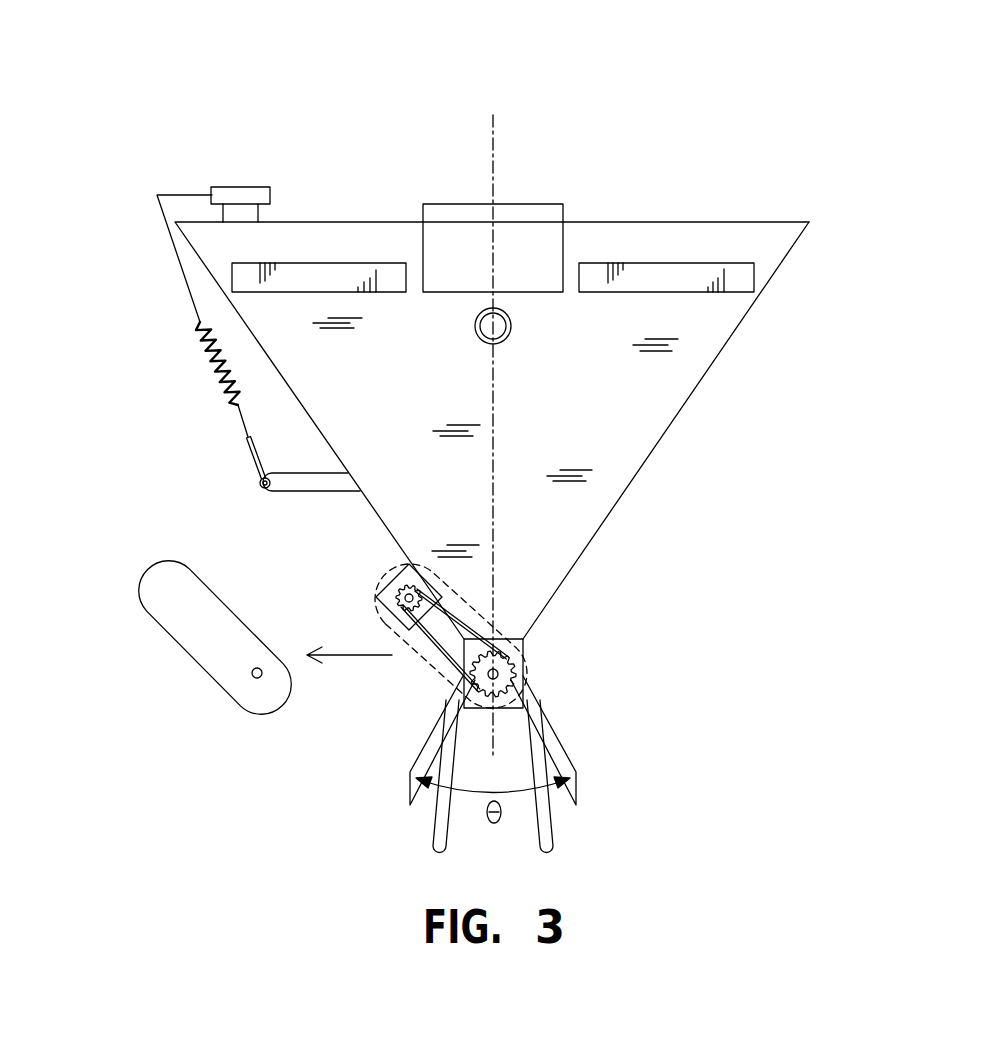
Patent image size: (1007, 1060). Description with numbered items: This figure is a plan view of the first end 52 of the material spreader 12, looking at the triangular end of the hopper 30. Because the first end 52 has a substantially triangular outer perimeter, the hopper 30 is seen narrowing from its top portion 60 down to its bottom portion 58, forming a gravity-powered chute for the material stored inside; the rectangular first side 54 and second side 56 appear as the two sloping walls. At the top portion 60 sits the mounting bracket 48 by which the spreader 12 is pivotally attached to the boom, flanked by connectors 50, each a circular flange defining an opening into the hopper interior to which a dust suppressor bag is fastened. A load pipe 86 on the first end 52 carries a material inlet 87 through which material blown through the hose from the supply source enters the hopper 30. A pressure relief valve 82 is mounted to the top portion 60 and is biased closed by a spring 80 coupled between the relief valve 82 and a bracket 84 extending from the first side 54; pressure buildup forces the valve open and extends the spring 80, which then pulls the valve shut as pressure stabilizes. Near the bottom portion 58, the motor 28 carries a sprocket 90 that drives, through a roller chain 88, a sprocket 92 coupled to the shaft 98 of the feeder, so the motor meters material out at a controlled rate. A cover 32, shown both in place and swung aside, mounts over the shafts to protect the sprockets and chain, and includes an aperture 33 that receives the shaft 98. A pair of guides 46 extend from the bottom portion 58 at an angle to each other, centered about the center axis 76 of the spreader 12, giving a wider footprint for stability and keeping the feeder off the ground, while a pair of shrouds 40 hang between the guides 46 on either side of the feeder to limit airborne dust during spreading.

The spreader 12 is at (750, 108).
The center axis 76 is at (493, 133).
The top portion 60 is at (782, 279).
The hopper 30 is at (625, 461).
The second side 56 is at (692, 393).
The pressure relief valve 82 is at (240, 186).
The mounting bracket 48 is at (462, 232).
The connector 50 is at (315, 270).
The load pipe 86 is at (508, 318).
The material inlet 87 is at (503, 335).
The first end 52 is at (395, 388).
The spring 80 is at (222, 378).
The bracket 84 is at (258, 485).
The first side 54 is at (380, 517).
The motor 28 is at (409, 564).
The sprocket 90 is at (378, 594).
The roller chain 88 is at (460, 685).
The sprocket 92 is at (505, 680).
The shaft 98 is at (500, 670).
The bottom portion 58 is at (600, 662).
The cover 32 is at (147, 598).
The aperture 33 is at (252, 673).
The guides 46 is at (425, 744).
The shrouds 40 is at (440, 836).